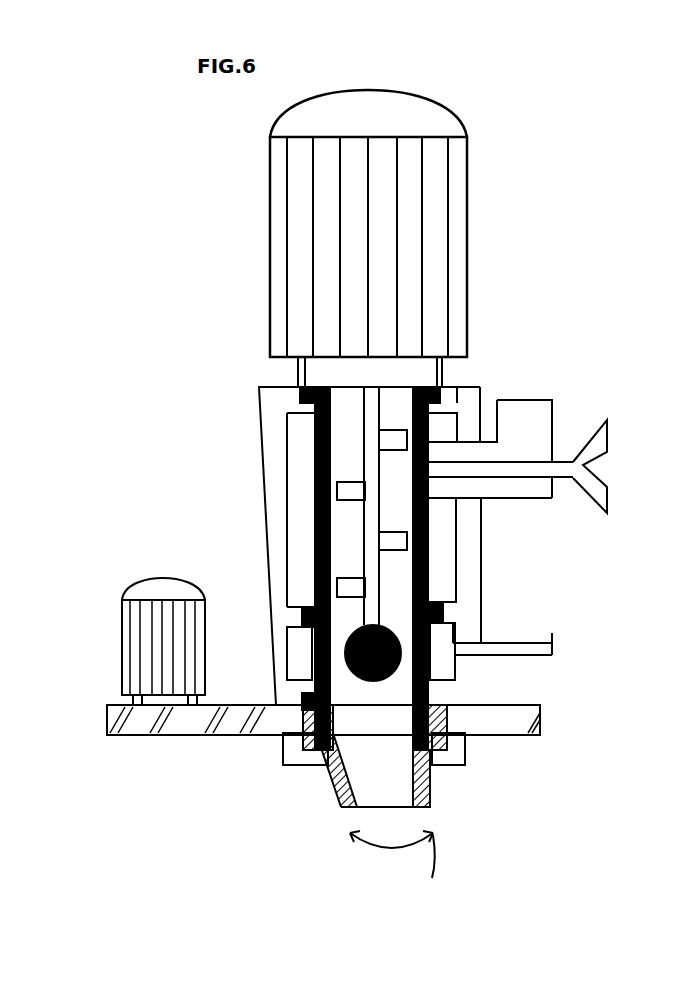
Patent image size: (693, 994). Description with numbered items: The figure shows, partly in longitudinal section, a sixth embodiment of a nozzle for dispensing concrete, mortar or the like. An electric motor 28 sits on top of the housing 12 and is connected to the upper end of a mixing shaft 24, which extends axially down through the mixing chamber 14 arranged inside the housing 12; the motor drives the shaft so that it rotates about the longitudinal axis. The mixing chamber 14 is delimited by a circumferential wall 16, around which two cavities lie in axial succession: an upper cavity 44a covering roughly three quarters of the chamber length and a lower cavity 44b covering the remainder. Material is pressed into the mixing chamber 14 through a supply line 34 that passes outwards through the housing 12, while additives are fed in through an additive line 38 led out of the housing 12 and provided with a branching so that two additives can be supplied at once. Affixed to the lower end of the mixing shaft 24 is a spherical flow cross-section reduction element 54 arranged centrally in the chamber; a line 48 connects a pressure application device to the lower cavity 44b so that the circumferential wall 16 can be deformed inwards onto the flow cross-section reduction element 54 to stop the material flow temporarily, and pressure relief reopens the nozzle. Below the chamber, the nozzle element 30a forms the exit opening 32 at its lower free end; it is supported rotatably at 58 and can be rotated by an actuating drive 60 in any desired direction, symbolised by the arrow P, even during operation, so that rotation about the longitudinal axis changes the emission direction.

The electric motor 28 is at (433, 187).
The housing 12 is at (463, 403).
The mixing shaft 24 is at (347, 468).
The mixing chamber 14 is at (315, 443).
The upper cavity 44a is at (300, 552).
The lower cavity 44b is at (300, 650).
The actuating drive 60 is at (170, 657).
The supply line 34 is at (522, 430).
The additive line 38 is at (567, 460).
The circumferential wall 16 is at (420, 535).
The line 48 is at (513, 650).
The rotatable support 58 is at (447, 715).
The flow cross-section reduction element 54 is at (373, 682).
The exit opening 32 is at (387, 807).
The nozzle element 30a is at (333, 783).
The arrow P is at (412, 865).